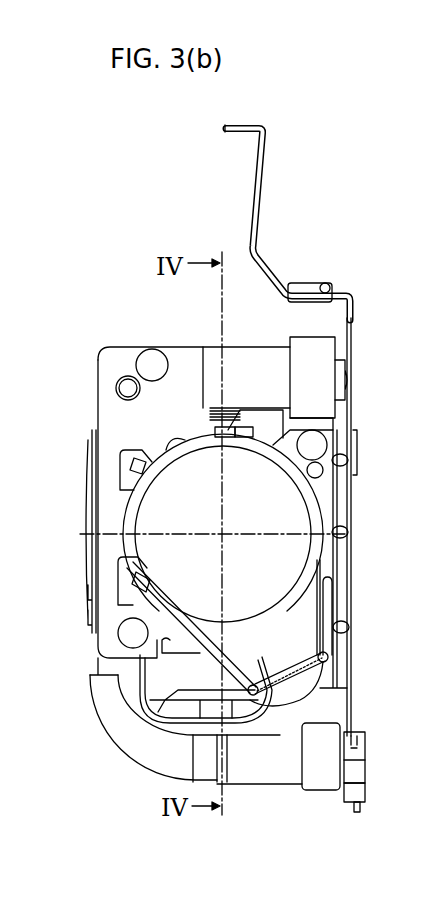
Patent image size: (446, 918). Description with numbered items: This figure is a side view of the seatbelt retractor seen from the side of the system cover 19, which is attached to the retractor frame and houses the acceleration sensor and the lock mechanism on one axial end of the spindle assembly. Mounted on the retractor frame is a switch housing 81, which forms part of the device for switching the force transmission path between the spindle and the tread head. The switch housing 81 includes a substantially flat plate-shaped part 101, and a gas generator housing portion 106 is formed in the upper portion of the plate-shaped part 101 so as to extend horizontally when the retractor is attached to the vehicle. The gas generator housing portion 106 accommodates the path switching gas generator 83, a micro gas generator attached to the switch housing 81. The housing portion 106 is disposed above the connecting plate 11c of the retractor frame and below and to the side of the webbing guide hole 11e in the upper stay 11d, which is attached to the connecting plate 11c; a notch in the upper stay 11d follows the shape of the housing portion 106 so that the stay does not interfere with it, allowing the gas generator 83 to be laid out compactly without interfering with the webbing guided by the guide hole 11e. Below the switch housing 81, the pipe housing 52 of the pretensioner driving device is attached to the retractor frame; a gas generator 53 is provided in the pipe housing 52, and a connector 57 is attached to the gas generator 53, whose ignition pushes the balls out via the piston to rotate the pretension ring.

The switch housing 81 is at (99, 338).
The substantially flat plate-shaped part 101 is at (123, 413).
The gas generator housing portion 106 is at (245, 372).
The upper stay 11d is at (258, 250).
The webbing guide hole 11e is at (330, 283).
The path switching gas generator 83 is at (340, 356).
The connecting plate 11c is at (343, 487).
The system cover 19 is at (267, 521).
The pipe housing 52 is at (135, 748).
The gas generator 53 is at (347, 756).
The connector 57 is at (357, 792).